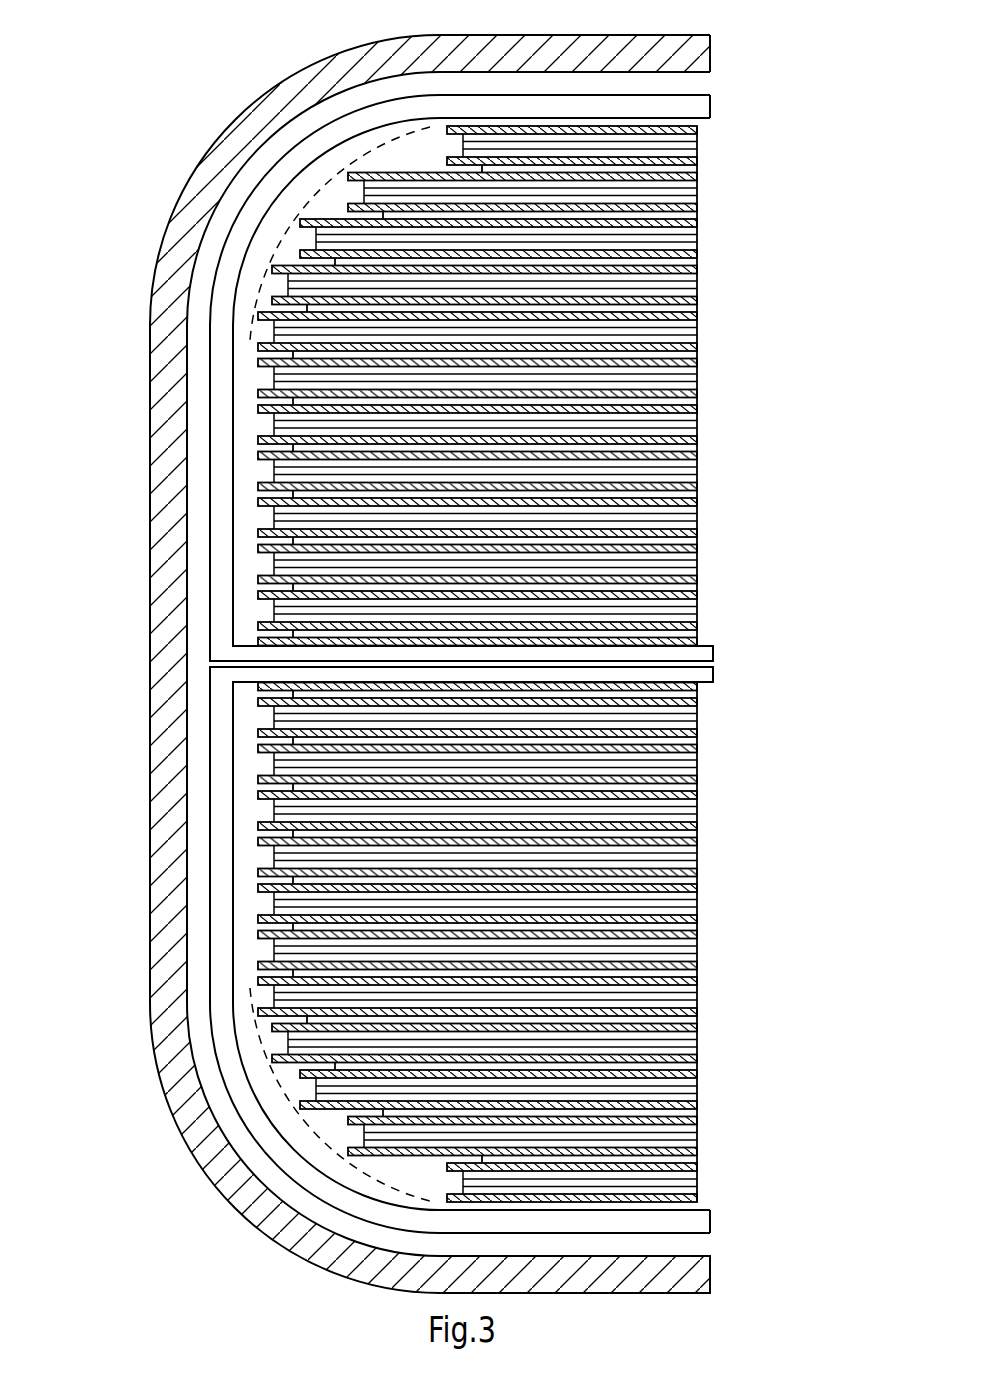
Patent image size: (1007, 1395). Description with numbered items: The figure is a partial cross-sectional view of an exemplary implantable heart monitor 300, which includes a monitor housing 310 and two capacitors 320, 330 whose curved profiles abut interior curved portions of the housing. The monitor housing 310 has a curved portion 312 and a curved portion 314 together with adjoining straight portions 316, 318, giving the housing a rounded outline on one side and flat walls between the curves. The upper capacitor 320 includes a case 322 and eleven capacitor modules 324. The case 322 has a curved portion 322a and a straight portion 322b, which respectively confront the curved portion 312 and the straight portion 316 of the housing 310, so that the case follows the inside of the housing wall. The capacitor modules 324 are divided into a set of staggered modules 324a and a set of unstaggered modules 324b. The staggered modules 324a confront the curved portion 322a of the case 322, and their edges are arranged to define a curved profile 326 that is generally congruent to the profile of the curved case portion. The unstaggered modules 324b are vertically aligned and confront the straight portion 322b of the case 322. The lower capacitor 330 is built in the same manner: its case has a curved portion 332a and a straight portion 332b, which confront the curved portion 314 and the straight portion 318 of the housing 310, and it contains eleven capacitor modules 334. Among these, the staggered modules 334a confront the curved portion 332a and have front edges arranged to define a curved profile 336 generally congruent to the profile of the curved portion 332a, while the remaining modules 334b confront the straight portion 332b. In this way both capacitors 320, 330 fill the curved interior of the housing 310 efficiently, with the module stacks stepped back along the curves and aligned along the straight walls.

The implantable heart monitor 300 is at (116, 14).
The monitor housing 310 is at (397, 664).
The curved portion 312 is at (228, 147).
The curved portion 314 is at (230, 1180).
The straight portion 316 is at (163, 567).
The straight portion 318 is at (163, 764).
The capacitor 320 is at (466, 663).
The case 322 is at (439, 663).
The curved portion 322a is at (268, 205).
The straight portion 322b is at (222, 506).
The capacitor modules 324 is at (553, 385).
The staggered modules 324a is at (711, 125).
The unstaggered modules 324b is at (517, 478).
The curved profile 326 is at (335, 182).
The capacitor 330 is at (466, 966).
The curved portion 332a is at (272, 1122).
The straight portion 332b is at (222, 826).
The capacitor modules 334 is at (553, 943).
The staggered modules 334a is at (524, 1109).
The modules 334b is at (711, 683).
The curved profile 336 is at (370, 1170).